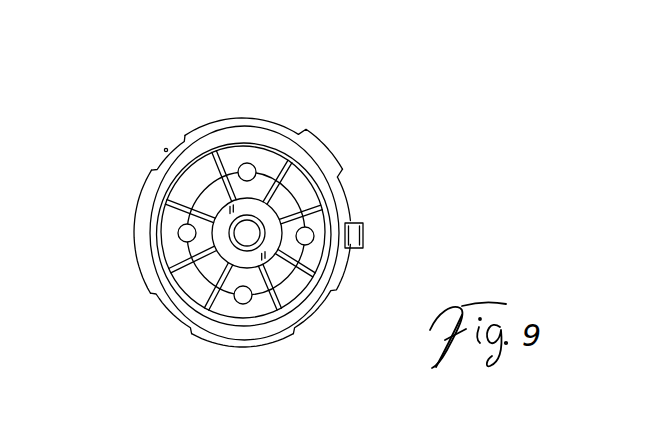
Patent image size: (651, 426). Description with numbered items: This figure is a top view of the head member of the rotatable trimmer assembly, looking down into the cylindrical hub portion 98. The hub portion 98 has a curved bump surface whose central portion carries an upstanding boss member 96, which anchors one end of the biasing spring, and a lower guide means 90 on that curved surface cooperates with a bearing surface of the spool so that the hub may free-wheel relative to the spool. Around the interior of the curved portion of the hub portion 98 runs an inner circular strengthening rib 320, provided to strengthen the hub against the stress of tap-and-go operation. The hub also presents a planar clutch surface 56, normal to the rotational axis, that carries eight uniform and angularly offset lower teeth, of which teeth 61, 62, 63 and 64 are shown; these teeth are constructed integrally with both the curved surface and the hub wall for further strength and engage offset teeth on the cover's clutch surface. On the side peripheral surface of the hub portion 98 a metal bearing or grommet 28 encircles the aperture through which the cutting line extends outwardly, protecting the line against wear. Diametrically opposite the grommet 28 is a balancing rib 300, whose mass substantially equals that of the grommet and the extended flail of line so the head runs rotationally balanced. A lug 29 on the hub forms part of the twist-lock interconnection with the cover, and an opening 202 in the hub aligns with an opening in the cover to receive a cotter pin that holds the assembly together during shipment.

The grommet 28 is at (366, 237).
The lug 29 is at (341, 154).
The clutch surface 56 is at (233, 322).
The tooth 61 is at (354, 213).
The tooth 62 is at (280, 335).
The tooth 63 is at (150, 296).
The tooth 64 is at (220, 124).
The lower guide means 90 is at (221, 206).
The boss member 96 is at (291, 183).
The hub portion 98 is at (350, 264).
The opening 202 is at (166, 148).
The balancing rib 300 is at (138, 246).
The inner circular strengthening rib 320 is at (322, 287).